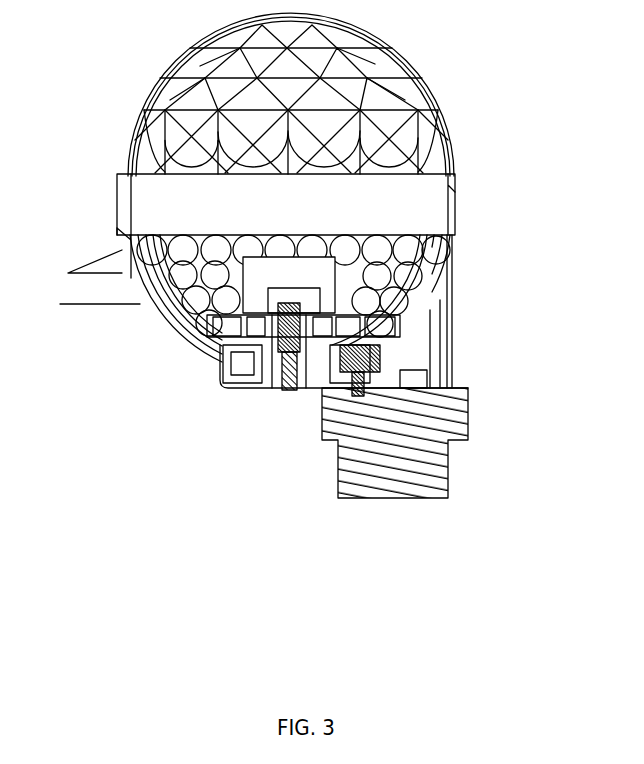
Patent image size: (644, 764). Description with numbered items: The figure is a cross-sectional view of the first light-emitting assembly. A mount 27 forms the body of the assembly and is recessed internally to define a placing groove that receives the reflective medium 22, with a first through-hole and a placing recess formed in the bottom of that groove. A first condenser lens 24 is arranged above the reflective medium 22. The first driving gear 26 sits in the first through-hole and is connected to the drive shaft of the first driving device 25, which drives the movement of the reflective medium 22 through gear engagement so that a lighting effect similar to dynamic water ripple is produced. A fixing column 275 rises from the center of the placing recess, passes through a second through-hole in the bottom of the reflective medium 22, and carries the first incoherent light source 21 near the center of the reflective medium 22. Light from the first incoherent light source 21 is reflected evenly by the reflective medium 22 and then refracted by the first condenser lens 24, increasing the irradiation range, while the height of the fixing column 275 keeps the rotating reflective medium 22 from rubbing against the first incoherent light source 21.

The first condenser lens 24 is at (348, 90).
The reflective medium 22 is at (447, 234).
The first incoherent light source 21 is at (297, 275).
The first driving gear 26 is at (380, 367).
The mount 27 is at (153, 320).
The fixing column 275 is at (275, 365).
The first driving device 25 is at (422, 475).